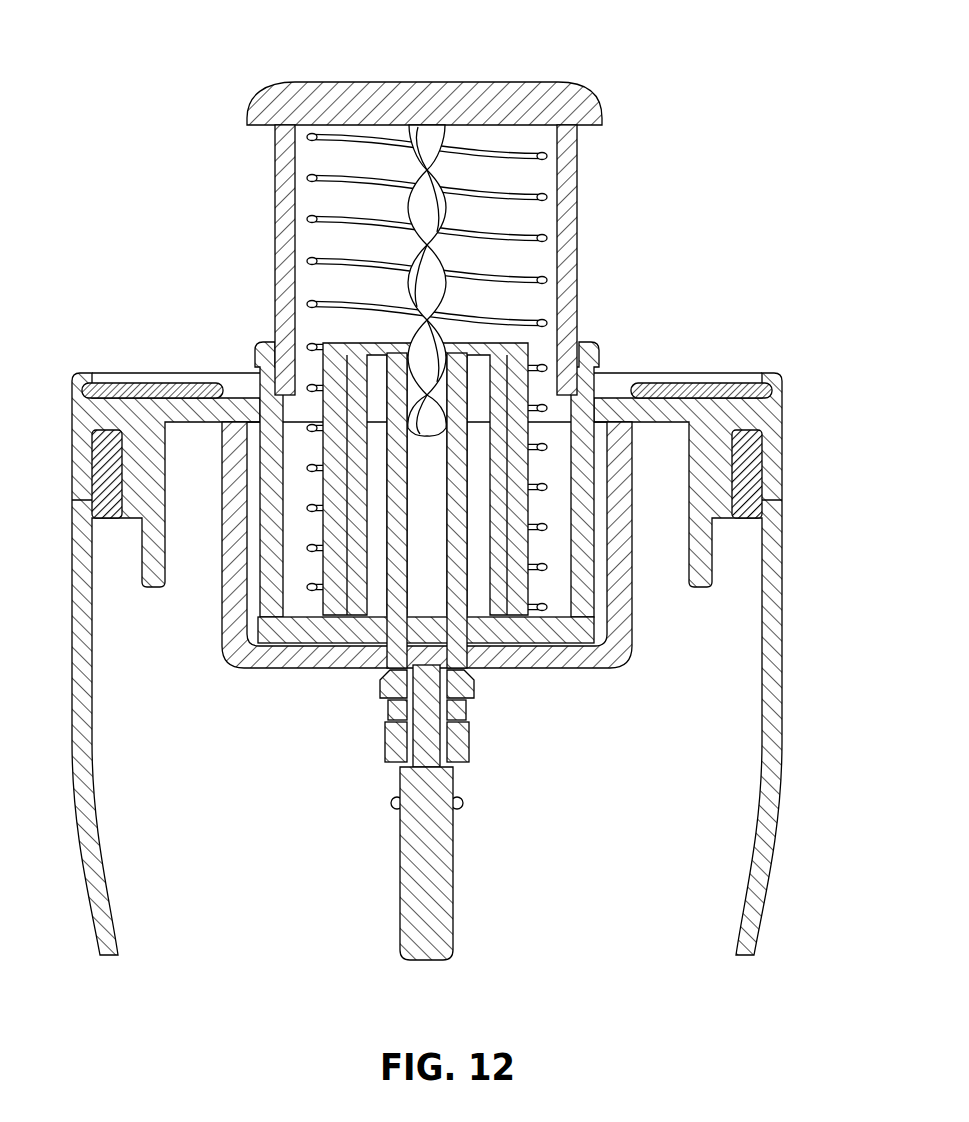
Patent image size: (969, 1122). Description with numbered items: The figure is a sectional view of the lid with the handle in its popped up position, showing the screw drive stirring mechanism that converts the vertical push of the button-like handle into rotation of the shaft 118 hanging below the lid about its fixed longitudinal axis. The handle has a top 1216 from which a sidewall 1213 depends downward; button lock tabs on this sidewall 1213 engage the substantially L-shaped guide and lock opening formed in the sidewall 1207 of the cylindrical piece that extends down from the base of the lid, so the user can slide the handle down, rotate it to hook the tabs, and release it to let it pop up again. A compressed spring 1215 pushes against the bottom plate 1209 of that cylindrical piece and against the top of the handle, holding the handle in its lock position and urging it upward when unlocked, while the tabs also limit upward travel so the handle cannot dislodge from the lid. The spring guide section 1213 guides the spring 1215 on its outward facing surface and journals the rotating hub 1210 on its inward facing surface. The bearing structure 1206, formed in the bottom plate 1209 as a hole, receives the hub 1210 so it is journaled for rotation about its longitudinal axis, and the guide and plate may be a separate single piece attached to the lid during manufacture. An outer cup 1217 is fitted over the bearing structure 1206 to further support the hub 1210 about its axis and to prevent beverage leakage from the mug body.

The top 1216 is at (527, 90).
The sidewall 1213 is at (568, 195).
The spring 1215 is at (538, 365).
The sidewall 1207 is at (572, 440).
The bearing structure 1206 is at (595, 615).
The bottom plate 1209 is at (522, 627).
The rotating hub 1210 is at (452, 588).
The outer cup 1217 is at (298, 672).
The shaft 118 is at (440, 893).